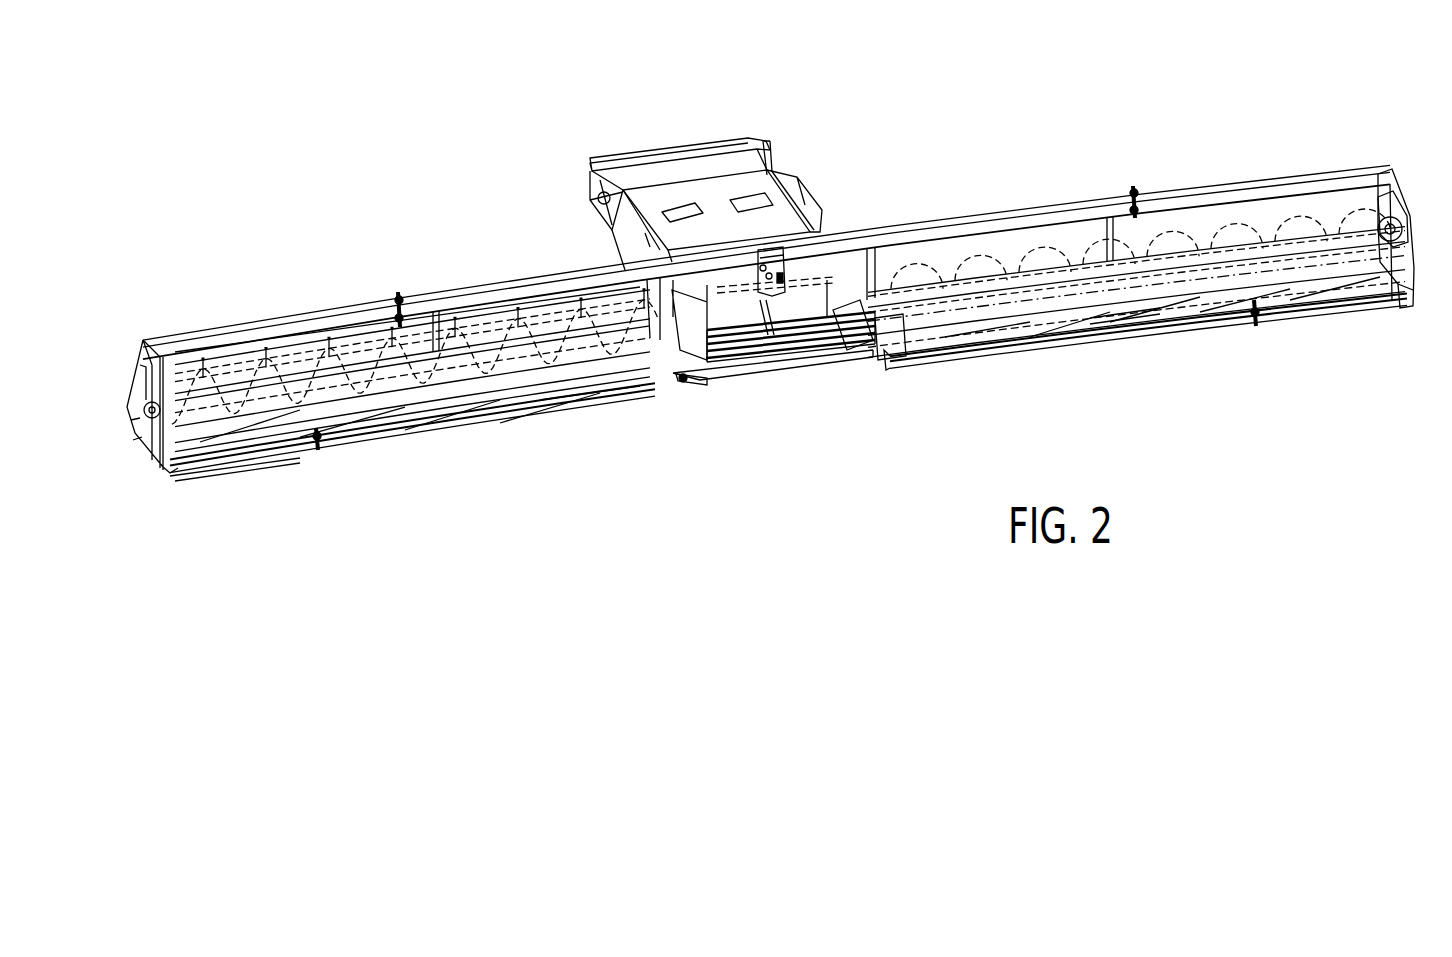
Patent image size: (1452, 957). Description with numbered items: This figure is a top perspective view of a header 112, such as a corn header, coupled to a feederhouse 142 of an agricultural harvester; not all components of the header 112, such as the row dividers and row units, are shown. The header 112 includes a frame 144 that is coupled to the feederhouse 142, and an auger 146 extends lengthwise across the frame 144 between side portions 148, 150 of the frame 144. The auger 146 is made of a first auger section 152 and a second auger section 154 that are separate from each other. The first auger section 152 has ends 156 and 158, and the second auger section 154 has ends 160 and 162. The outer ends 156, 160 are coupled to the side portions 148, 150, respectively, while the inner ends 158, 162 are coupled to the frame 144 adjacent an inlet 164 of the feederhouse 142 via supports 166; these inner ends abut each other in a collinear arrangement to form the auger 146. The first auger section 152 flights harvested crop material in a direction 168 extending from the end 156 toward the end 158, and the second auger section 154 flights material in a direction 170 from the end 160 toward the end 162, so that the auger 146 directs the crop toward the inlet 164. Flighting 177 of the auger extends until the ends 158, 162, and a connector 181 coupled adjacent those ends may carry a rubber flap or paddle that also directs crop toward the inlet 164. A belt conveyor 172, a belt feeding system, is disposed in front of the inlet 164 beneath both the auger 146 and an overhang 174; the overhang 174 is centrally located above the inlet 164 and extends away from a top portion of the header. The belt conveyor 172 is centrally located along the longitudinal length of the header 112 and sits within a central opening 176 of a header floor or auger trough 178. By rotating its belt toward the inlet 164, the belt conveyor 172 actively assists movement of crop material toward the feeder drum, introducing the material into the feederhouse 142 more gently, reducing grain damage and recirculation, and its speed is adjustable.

The header 112 is at (345, 282).
The feederhouse 142 is at (604, 148).
The frame 144 is at (286, 322).
The auger 146 is at (418, 418).
The side portion 148 is at (162, 460).
The side portion 150 is at (1404, 232).
The first auger section 152 is at (357, 432).
The second auger section 154 is at (993, 345).
The end 156 is at (212, 458).
The end 158 is at (750, 382).
The end 160 is at (1358, 272).
The end 162 is at (879, 358).
The inlet 164 is at (697, 313).
The support 166 is at (805, 345).
The direction 168 is at (518, 488).
The direction 170 is at (1310, 378).
The belt conveyor 172 is at (708, 384).
The overhang 174 is at (832, 266).
The central opening 176 is at (843, 367).
The flighting 177 is at (592, 408).
The header floor or trough 178 is at (1121, 322).
The connector 181 is at (761, 334).